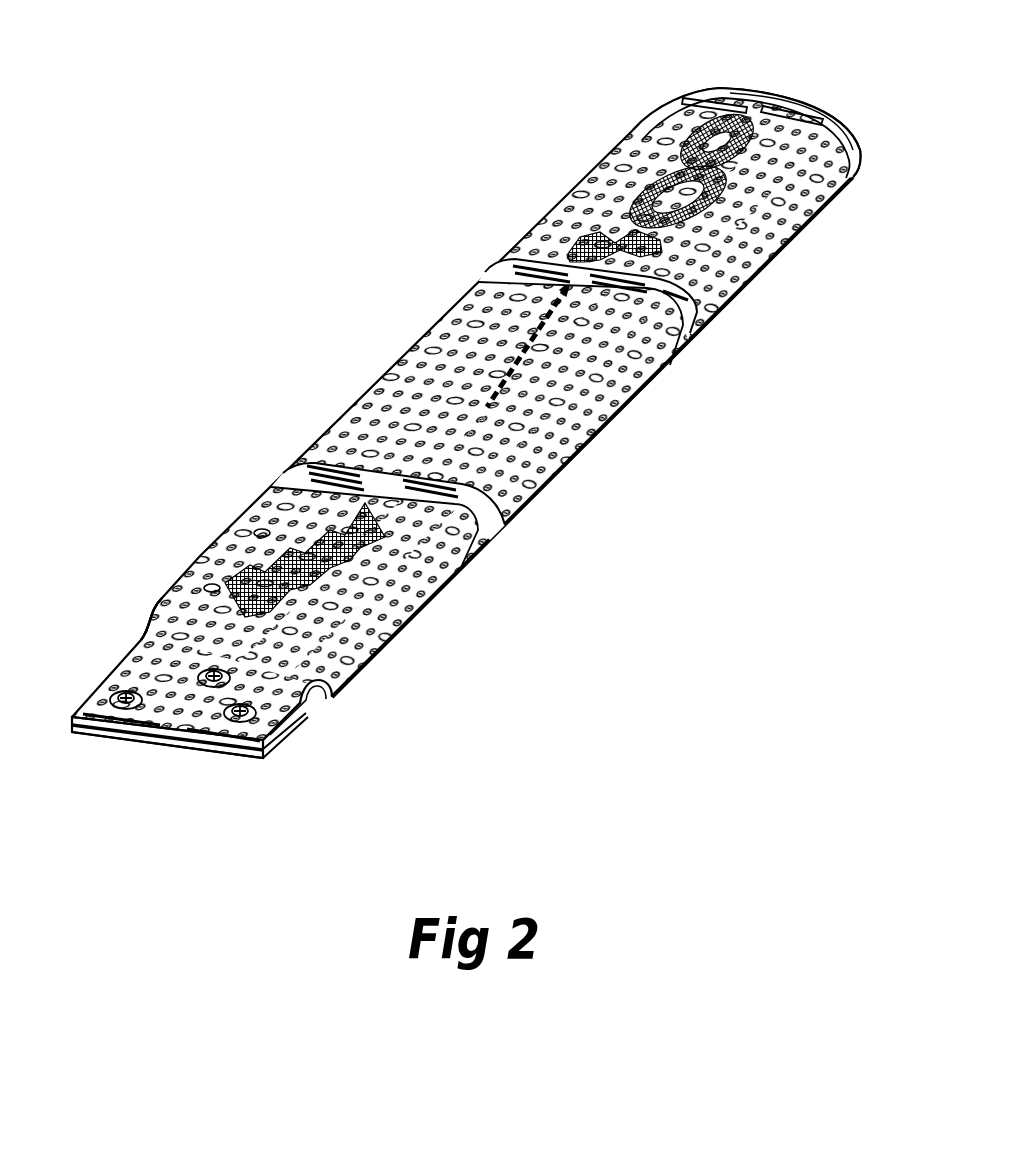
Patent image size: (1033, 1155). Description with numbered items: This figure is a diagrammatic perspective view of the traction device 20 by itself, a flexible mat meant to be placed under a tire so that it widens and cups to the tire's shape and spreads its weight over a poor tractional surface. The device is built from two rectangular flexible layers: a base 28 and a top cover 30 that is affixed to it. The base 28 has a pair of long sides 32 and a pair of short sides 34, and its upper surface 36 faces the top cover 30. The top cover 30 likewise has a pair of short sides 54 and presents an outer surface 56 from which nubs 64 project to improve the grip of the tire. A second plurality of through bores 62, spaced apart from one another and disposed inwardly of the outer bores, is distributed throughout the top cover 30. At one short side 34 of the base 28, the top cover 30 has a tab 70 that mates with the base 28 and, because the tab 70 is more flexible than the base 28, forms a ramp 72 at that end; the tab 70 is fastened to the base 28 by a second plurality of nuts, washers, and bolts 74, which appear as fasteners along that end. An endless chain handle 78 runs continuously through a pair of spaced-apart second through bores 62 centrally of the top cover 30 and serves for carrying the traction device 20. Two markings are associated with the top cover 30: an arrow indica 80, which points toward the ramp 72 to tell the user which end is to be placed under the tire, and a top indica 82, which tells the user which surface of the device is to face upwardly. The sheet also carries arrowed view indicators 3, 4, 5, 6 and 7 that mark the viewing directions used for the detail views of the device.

The traction device 20 is at (330, 232).
The base 28 is at (318, 727).
The top cover 30 is at (280, 465).
The long sides 32 is at (66, 720).
The short sides 34 is at (218, 762).
The upper surface 36 is at (312, 698).
The short sides 54 is at (722, 88).
The outer surface 56 is at (378, 418).
The second plurality of through bores 62 is at (255, 526).
The nubs 64 is at (203, 579).
The tab 70 is at (142, 641).
The ramp 72 is at (151, 619).
The second plurality of nuts, washers, and bolts 74 is at (127, 704).
The endless chain handle 78 is at (522, 345).
The arrow indica 80 is at (365, 548).
The top indica 82 is at (645, 170).
The view direction FIG. 3 is at (477, 203).
The view direction FIG. 4 is at (362, 311).
The view direction FIG. 5 is at (547, 537).
The view direction FIG. 6 is at (155, 765).
The view direction FIG. 7 is at (792, 76).